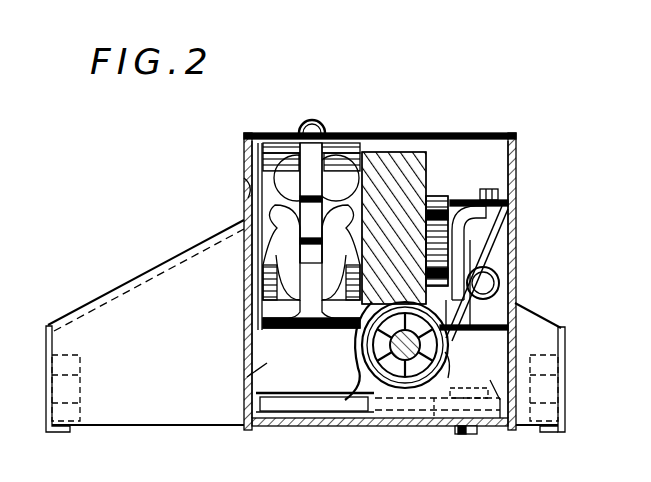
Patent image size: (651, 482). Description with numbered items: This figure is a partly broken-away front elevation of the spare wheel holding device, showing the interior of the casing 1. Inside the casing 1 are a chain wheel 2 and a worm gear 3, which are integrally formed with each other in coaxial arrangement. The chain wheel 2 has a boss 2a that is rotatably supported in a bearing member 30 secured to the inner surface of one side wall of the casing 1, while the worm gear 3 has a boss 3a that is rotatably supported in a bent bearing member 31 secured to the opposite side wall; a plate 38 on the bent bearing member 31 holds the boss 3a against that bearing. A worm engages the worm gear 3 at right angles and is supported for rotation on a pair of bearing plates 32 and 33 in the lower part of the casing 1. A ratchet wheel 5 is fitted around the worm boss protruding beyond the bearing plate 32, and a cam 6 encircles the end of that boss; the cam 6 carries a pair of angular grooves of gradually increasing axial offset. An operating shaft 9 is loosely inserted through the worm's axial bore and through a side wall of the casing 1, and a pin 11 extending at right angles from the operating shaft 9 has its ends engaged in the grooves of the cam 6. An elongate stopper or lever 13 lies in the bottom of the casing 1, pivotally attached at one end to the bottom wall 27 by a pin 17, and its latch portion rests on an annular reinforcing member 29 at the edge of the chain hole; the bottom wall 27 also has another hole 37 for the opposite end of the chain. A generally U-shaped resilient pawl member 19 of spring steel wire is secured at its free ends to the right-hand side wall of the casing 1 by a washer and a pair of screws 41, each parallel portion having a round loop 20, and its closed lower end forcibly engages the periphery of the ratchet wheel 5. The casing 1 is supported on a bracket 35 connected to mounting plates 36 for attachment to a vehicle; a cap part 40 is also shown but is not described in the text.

The casing 1 is at (244, 204).
The chain wheel 2 is at (262, 152).
The boss 2a is at (246, 182).
The worm gear 3 is at (392, 160).
The boss 3a is at (453, 200).
The ratchet wheel 5 is at (410, 388).
The cam 6 is at (357, 392).
The operating shaft 9 is at (376, 392).
The pin 11 is at (404, 395).
The lever 13 is at (280, 402).
The pin 17 is at (466, 434).
The pawl member 19 is at (492, 246).
The round loop 20 is at (499, 283).
The bottom wall 27 is at (447, 428).
The annular reinforcing member 29 is at (256, 410).
The bearing member 30 is at (244, 282).
The bent bearing member 31 is at (503, 205).
The bearing plate 32 is at (500, 398).
The bearing plate 33 is at (258, 376).
The bracket 35 is at (130, 292).
The mounting plates 36 is at (46, 336).
The hole 37 is at (300, 425).
The plate 38 is at (472, 236).
The cap plate 40 is at (508, 203).
The screws 41 is at (498, 190).